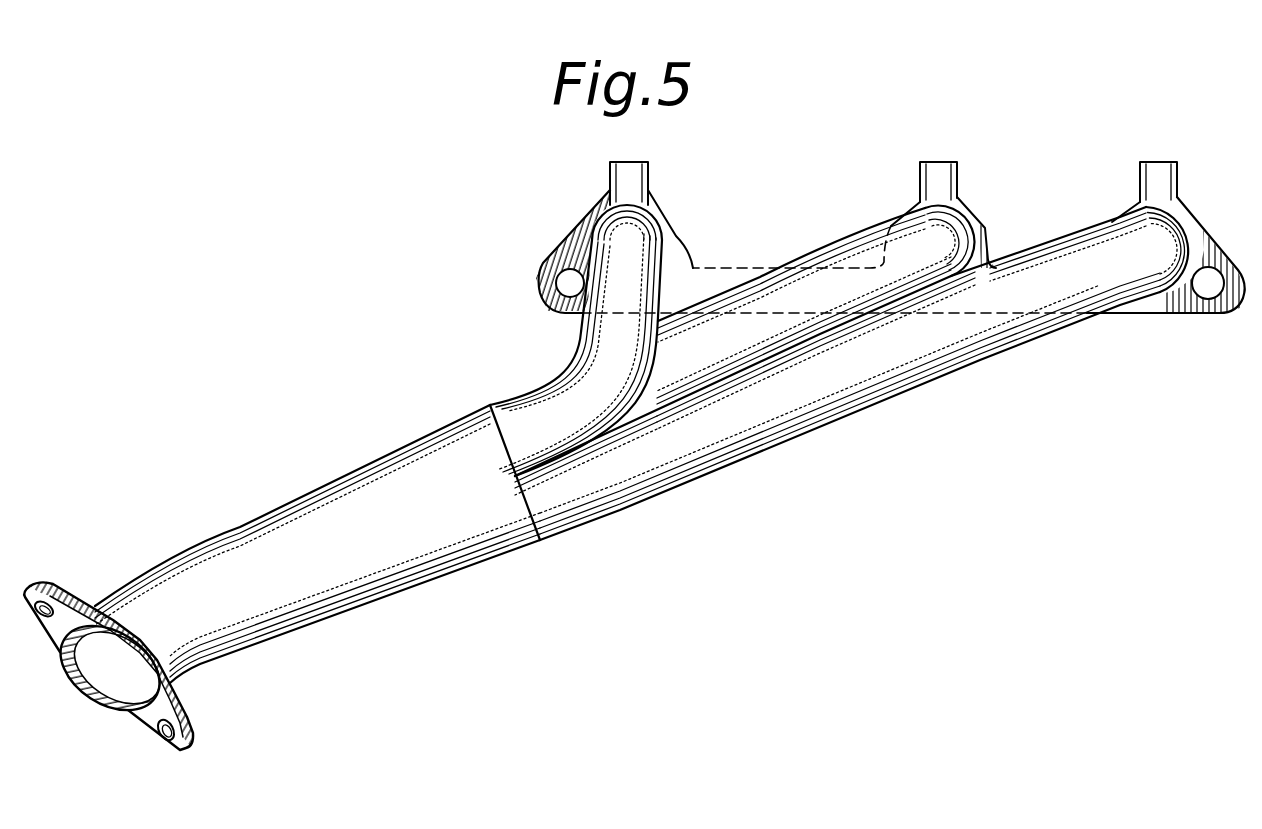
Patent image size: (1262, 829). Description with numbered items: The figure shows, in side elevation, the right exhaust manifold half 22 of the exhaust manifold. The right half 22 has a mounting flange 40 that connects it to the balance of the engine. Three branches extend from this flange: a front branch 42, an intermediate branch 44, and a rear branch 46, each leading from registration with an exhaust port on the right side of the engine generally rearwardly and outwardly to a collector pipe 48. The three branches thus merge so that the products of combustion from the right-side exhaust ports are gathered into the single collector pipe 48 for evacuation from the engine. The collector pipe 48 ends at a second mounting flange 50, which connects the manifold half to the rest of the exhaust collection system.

The right half 22 is at (635, 456).
The mounting flange 40 is at (704, 290).
The front branch 42 is at (1158, 239).
The intermediate branch 44 is at (958, 236).
The rear branch 46 is at (655, 240).
The collector pipe 48 is at (462, 546).
The mounting flange 50 is at (193, 718).